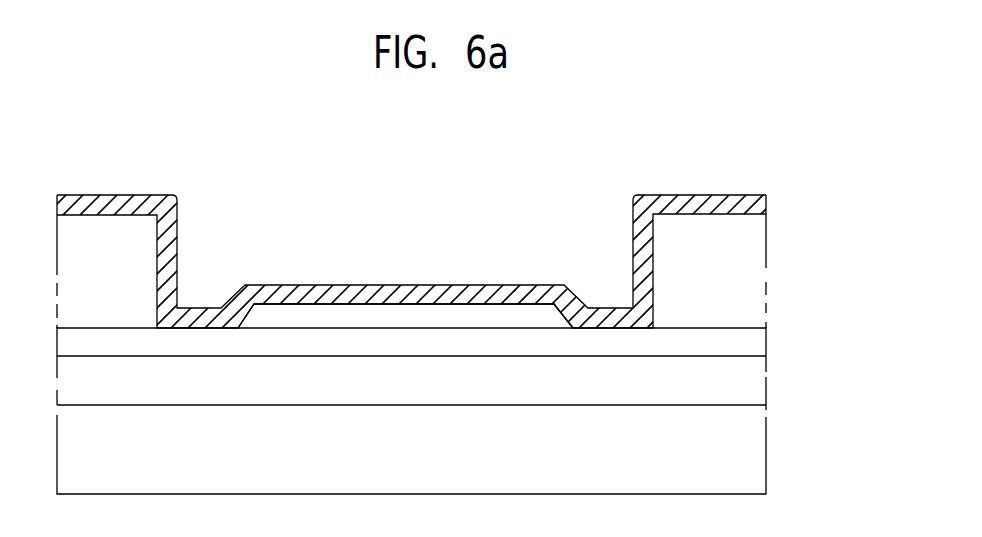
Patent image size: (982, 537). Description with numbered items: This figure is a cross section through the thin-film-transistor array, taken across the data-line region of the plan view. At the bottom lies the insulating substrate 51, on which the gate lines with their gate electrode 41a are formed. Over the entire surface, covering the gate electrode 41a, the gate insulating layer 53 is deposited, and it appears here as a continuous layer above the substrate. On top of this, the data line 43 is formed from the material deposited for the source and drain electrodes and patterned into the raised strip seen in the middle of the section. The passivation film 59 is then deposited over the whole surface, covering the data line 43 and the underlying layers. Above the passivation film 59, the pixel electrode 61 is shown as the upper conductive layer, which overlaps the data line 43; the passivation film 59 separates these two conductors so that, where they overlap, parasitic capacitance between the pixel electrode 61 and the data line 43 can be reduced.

The data line 43 is at (400, 318).
The gate electrode 41a is at (755, 387).
The insulating substrate 51 is at (755, 457).
The gate insulating layer 53 is at (755, 346).
The passivation film 59 is at (755, 287).
The pixel electrode 61 is at (768, 198).